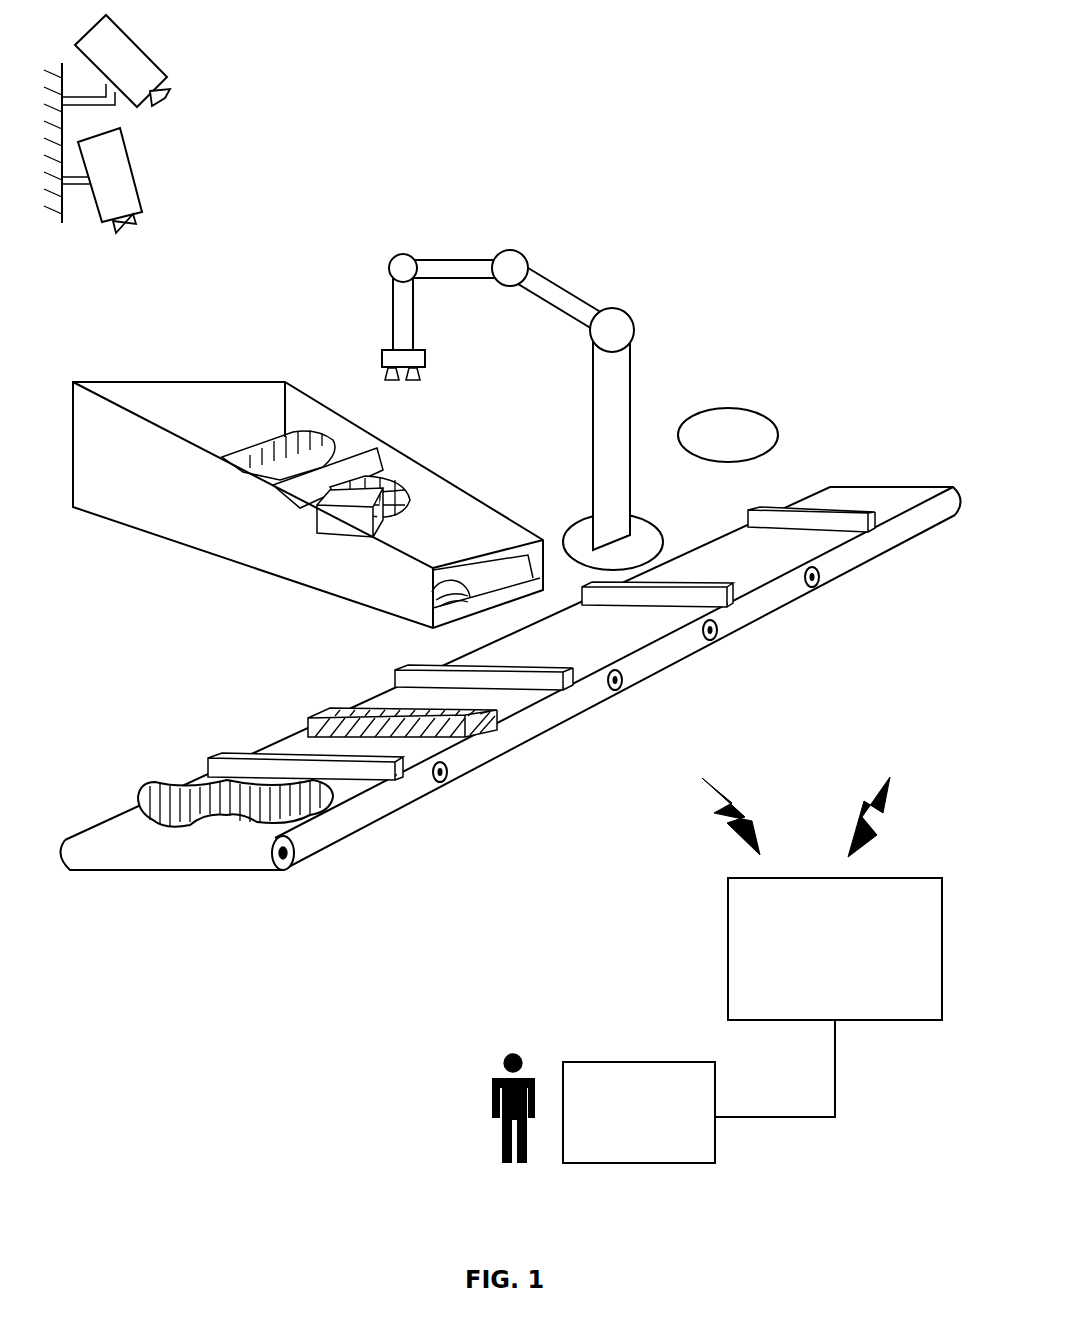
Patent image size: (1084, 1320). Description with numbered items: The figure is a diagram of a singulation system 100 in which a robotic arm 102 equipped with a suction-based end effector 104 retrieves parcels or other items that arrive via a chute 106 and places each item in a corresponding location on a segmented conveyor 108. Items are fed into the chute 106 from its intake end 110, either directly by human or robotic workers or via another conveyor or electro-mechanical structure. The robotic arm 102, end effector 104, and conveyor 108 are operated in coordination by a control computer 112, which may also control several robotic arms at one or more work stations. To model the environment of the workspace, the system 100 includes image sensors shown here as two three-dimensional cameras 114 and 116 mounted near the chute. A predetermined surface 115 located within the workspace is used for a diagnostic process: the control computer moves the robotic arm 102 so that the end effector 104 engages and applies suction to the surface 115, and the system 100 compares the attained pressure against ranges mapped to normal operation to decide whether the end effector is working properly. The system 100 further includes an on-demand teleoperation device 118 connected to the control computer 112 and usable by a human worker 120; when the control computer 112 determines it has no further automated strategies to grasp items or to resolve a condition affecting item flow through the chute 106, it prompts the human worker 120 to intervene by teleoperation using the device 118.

The singulation system 100 is at (790, 72).
The robotic arm 102 is at (630, 405).
The suction-based end effector 104 is at (425, 358).
The chute 106 is at (232, 563).
The segmented conveyor 108 is at (870, 500).
The intake end 110 is at (177, 363).
The control computer 112 is at (728, 917).
The 3D camera 114 is at (137, 107).
The surface 115 is at (772, 415).
The 3D camera 116 is at (140, 193).
The on-demand teleoperation device 118 is at (630, 1060).
The human worker 120 is at (513, 1052).